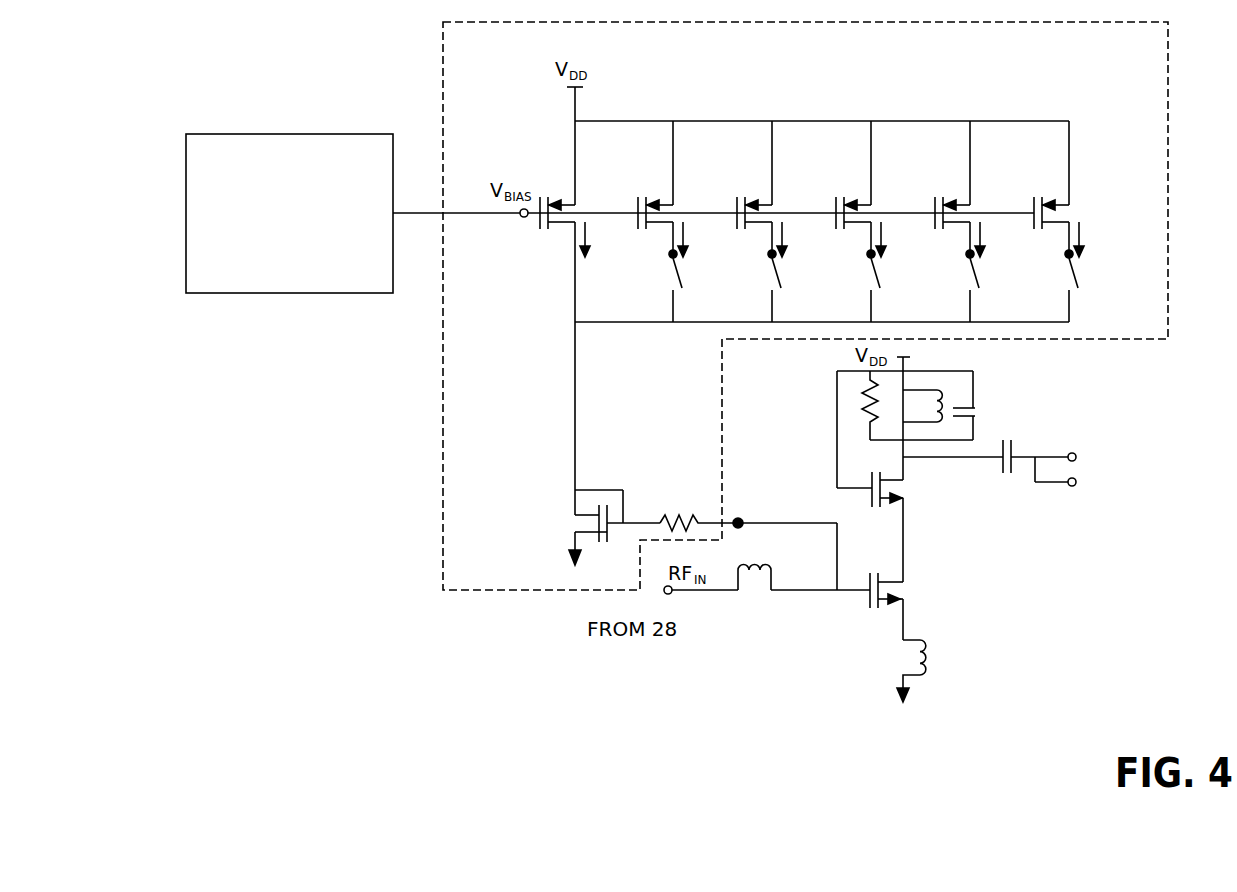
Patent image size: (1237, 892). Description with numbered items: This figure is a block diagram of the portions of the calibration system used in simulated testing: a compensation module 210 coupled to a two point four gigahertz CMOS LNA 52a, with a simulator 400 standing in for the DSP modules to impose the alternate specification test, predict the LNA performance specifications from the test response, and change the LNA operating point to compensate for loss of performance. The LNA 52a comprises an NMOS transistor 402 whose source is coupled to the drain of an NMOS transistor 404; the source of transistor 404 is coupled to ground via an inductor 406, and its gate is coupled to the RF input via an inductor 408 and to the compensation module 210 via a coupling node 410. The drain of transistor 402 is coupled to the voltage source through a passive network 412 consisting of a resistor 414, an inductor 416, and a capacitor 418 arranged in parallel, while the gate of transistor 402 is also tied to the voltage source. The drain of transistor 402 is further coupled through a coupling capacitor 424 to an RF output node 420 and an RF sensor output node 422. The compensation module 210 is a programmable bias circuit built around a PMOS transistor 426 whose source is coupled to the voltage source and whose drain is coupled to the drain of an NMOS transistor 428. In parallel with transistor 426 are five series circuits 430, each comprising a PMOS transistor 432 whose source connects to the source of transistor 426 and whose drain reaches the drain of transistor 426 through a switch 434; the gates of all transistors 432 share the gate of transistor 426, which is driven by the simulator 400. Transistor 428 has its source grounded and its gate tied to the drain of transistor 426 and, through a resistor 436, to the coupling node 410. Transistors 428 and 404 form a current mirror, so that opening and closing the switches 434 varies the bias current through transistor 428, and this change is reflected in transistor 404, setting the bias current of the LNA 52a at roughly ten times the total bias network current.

The simulator 400 is at (272, 244).
The compensation module 210 is at (1153, 49).
The PMOS transistor 426 is at (565, 197).
The PMOS transistor 432 is at (635, 202).
The series circuit 430 is at (697, 177).
The switch 434 is at (679, 273).
The resistor 436 is at (665, 510).
The NMOS transistor 428 is at (607, 538).
The coupling node 410 is at (740, 517).
The inductor 408 is at (773, 576).
The resistor 414 is at (862, 420).
The inductor 416 is at (952, 394).
The capacitor 418 is at (977, 418).
The passive network 412 is at (949, 423).
The RF output node 420 is at (1073, 452).
The RF sensor output node 422 is at (1073, 487).
The coupling capacitor 424 is at (1002, 465).
The NMOS transistor 402 is at (882, 508).
The NMOS transistor 404 is at (868, 598).
The inductor 406 is at (921, 676).
The LNA 52a is at (1010, 585).